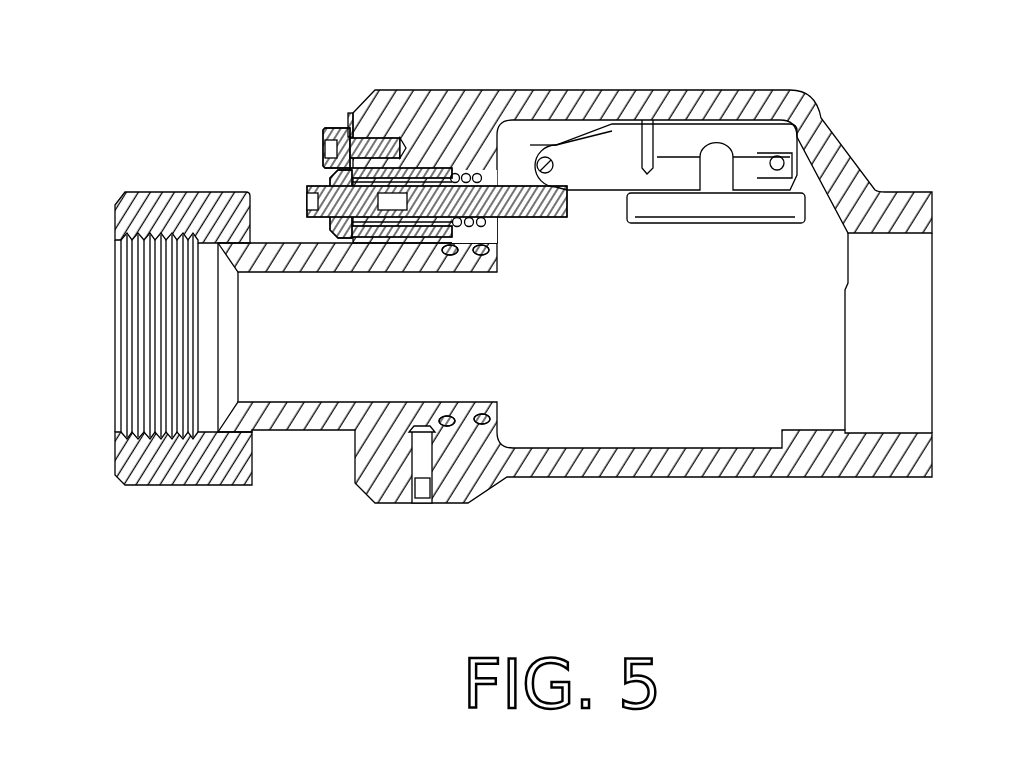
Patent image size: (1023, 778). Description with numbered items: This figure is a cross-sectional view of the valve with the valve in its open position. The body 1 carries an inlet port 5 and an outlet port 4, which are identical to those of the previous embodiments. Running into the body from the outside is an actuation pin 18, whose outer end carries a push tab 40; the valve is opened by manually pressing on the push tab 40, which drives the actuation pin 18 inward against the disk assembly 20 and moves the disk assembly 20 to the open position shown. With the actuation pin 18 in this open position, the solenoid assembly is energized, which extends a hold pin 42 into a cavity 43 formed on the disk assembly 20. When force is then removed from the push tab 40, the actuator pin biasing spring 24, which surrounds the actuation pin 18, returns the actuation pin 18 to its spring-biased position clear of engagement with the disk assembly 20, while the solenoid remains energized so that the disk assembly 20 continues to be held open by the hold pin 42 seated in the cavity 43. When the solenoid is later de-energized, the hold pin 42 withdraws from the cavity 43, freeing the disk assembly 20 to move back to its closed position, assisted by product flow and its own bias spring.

The body 1 is at (920, 462).
The outlet port 4 is at (145, 325).
The inlet port 5 is at (918, 348).
The actuation pin 18 is at (553, 206).
The disk assembly 20 is at (722, 224).
The actuator pin biasing spring 24 is at (480, 224).
The push tab 40 is at (342, 182).
The hold pin 42 is at (782, 162).
The cavity 43 is at (788, 177).